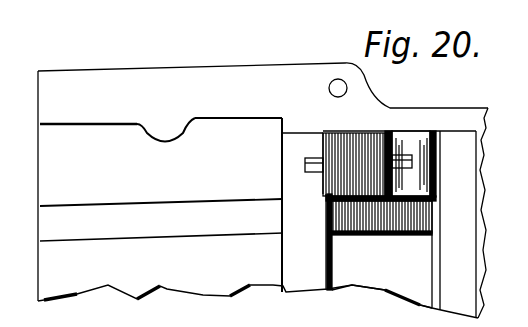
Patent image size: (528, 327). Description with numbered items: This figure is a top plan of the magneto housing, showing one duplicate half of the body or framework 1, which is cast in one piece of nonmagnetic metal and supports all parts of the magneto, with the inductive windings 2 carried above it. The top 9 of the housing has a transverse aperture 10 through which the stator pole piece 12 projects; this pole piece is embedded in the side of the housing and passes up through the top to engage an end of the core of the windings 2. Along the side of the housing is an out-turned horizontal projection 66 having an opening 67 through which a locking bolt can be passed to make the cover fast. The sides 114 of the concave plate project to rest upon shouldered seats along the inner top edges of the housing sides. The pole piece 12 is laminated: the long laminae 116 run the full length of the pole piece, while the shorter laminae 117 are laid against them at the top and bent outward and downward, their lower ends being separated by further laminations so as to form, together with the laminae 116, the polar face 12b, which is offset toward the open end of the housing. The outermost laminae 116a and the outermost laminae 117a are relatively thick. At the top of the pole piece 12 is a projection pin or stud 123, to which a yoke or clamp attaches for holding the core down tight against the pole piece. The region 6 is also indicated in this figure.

The body or framework 1 is at (55, 148).
The inductive windings 2 is at (143, 70).
The lower frame portion 6 is at (161, 256).
The top 9 is at (313, 242).
The transverse aperture 10 is at (382, 293).
The stator pole piece 12 is at (357, 147).
The polar face 12b is at (368, 234).
The out-turned horizontal projections 66 is at (232, 108).
The openings 67 is at (337, 79).
The sides of plate 114 is at (161, 162).
The laminae 116 is at (380, 131).
The outermost laminae 116a is at (446, 197).
The shorter laminae 117 is at (333, 179).
The outermost laminae 117a is at (330, 261).
The projection pins or studs 123 is at (305, 165).